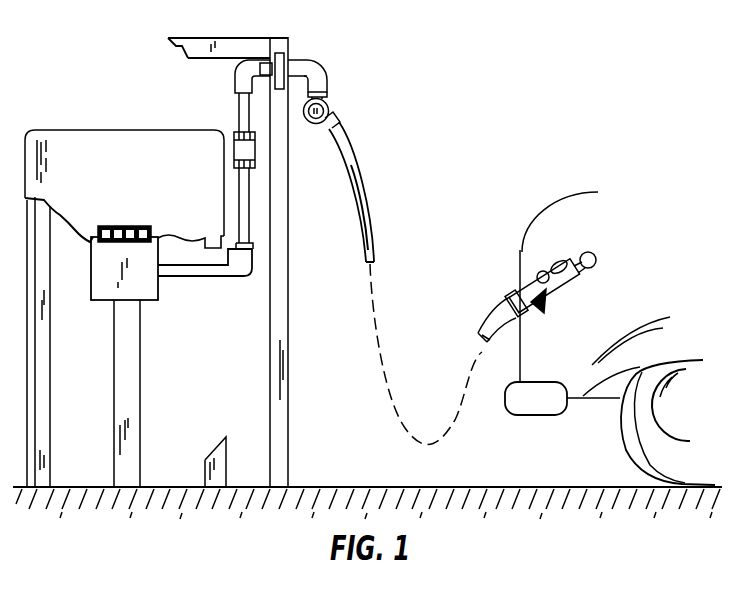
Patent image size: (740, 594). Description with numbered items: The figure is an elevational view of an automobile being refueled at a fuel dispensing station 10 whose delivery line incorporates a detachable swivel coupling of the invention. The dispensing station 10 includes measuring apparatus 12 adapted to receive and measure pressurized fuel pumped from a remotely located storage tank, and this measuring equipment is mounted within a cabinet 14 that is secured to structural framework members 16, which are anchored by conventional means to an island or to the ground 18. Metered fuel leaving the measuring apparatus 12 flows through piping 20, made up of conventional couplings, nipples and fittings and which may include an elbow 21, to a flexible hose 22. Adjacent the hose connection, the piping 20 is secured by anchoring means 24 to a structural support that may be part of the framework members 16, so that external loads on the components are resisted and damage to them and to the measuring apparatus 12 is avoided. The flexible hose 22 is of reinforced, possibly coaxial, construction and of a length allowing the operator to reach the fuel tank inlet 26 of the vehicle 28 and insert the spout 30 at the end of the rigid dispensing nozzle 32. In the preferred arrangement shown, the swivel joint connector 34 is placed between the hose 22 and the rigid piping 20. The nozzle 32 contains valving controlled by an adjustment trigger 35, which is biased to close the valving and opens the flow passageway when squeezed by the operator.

The dispensing station 10 is at (487, 89).
The measuring apparatus 12 is at (157, 300).
The cabinet 14 is at (106, 133).
The structural framework members 16 is at (50, 338).
The ground 18 is at (385, 487).
The piping 20 is at (176, 277).
The elbow 21 is at (324, 69).
The flexible hose 22 is at (369, 204).
The anchoring means 24 is at (290, 57).
The fuel tank inlet 26 is at (594, 253).
The vehicle 28 is at (554, 198).
The spout 30 is at (597, 266).
The rigid dispensing nozzle 32 is at (531, 276).
The swivel joint connector 34 is at (342, 90).
The adjustment trigger 35 is at (546, 312).